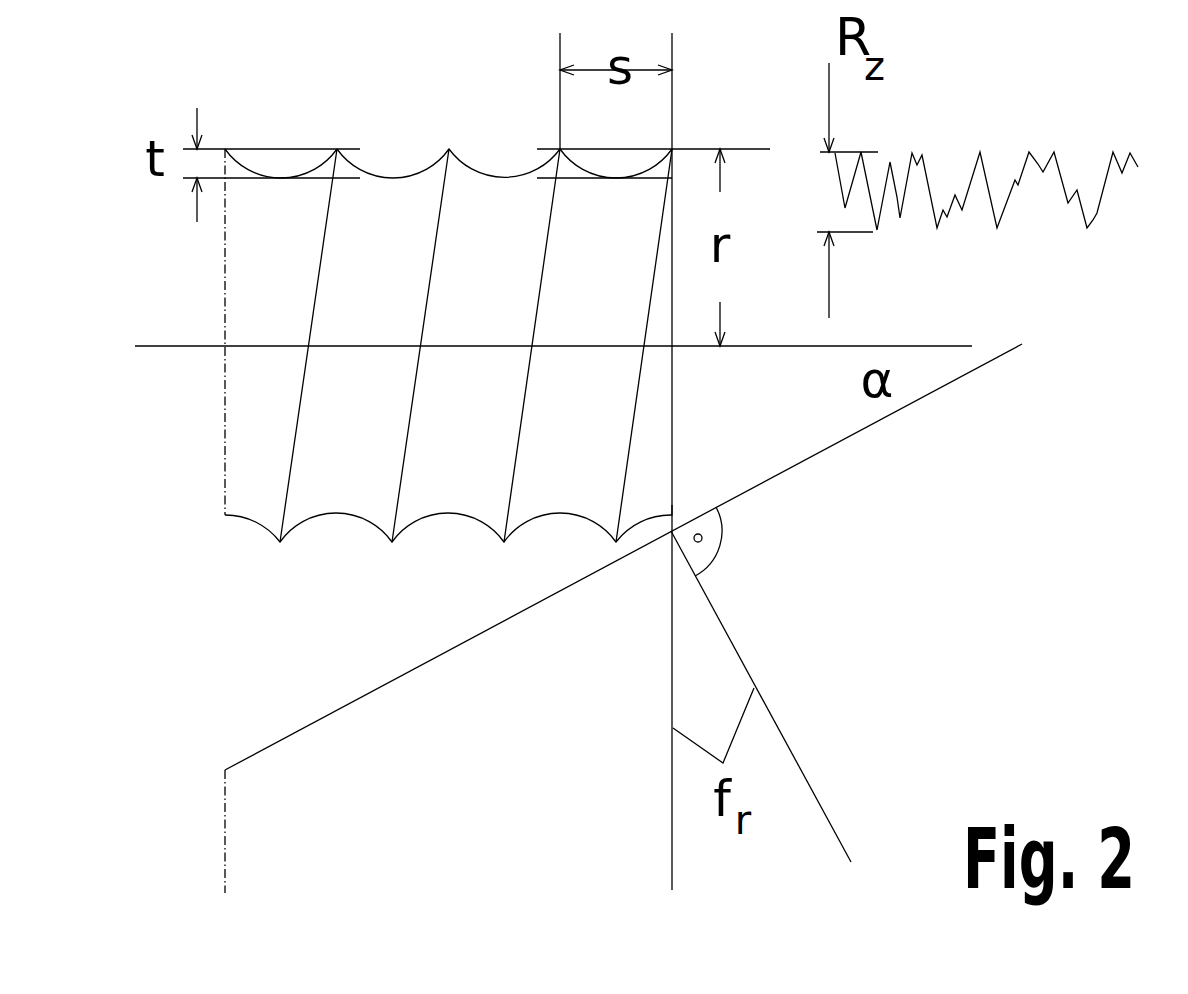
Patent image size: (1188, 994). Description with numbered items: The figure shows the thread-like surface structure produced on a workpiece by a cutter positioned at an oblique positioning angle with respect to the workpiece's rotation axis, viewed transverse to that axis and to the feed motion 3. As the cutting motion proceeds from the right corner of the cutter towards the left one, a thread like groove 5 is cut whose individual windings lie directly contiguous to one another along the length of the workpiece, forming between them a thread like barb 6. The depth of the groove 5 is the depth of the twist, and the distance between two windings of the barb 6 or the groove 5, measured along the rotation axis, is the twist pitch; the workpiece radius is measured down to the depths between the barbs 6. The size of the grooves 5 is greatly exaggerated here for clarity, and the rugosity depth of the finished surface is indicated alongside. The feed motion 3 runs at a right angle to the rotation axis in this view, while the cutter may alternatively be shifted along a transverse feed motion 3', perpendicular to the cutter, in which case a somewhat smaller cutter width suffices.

The feed motion 3 is at (594, 461).
The transverse feed motion 3' is at (819, 696).
The thread like groove 5 is at (387, 157).
The thread like barb 6 is at (340, 150).